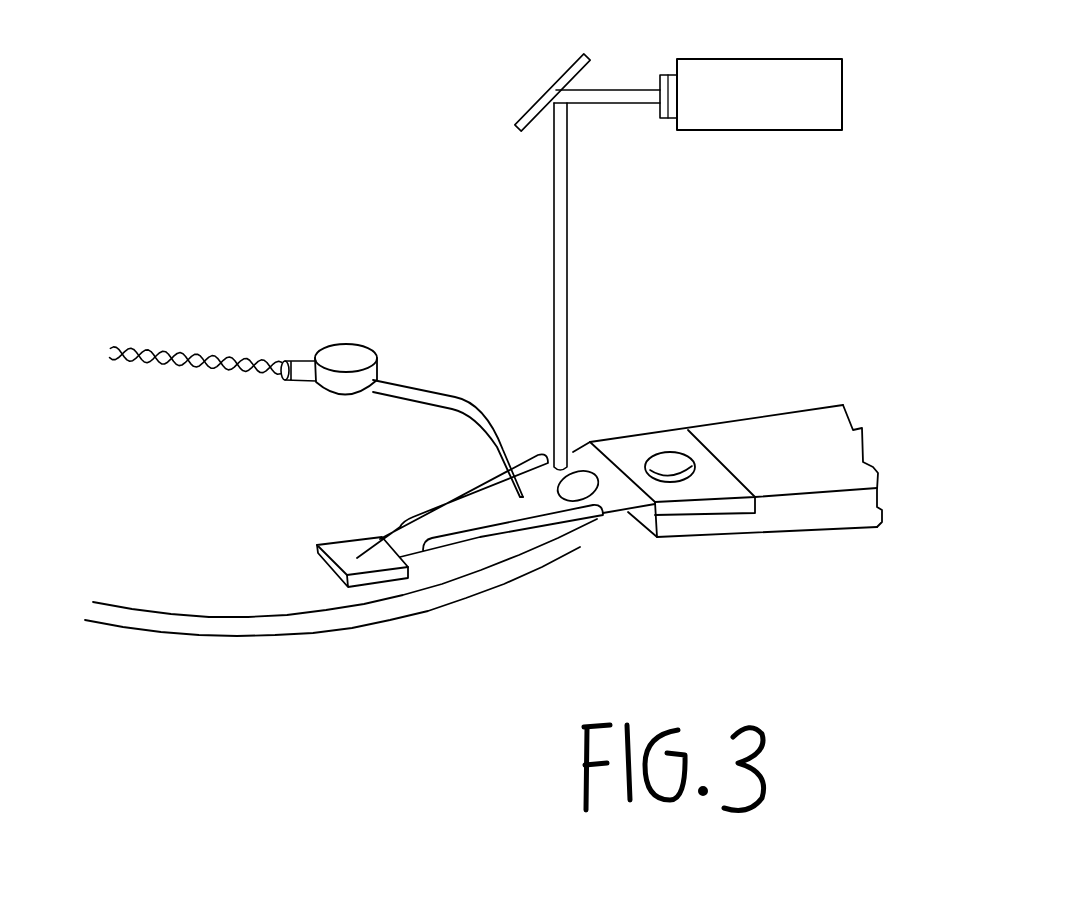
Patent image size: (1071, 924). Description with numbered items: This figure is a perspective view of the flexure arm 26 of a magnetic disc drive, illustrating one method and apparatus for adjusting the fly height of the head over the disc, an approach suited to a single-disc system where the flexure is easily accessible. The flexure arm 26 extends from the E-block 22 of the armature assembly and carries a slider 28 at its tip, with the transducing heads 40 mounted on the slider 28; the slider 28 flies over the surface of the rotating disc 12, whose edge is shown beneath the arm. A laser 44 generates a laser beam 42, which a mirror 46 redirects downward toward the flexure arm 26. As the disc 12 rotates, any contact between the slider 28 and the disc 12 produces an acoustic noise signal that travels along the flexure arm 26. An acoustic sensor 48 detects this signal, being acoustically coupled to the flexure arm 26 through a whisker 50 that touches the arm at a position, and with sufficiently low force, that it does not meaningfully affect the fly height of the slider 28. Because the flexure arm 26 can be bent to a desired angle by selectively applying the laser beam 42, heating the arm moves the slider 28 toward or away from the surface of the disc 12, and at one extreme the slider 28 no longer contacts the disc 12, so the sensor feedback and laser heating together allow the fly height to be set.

The disc 12 is at (261, 624).
The E-block 22 is at (818, 532).
The flexure arm 26 is at (507, 535).
The slider 28 is at (383, 588).
The transducing heads 40 is at (328, 576).
The laser beam 42 is at (565, 190).
The laser 44 is at (790, 130).
The mirror 46 is at (552, 92).
The acoustic sensor 48 is at (343, 357).
The whisker 50 is at (417, 394).